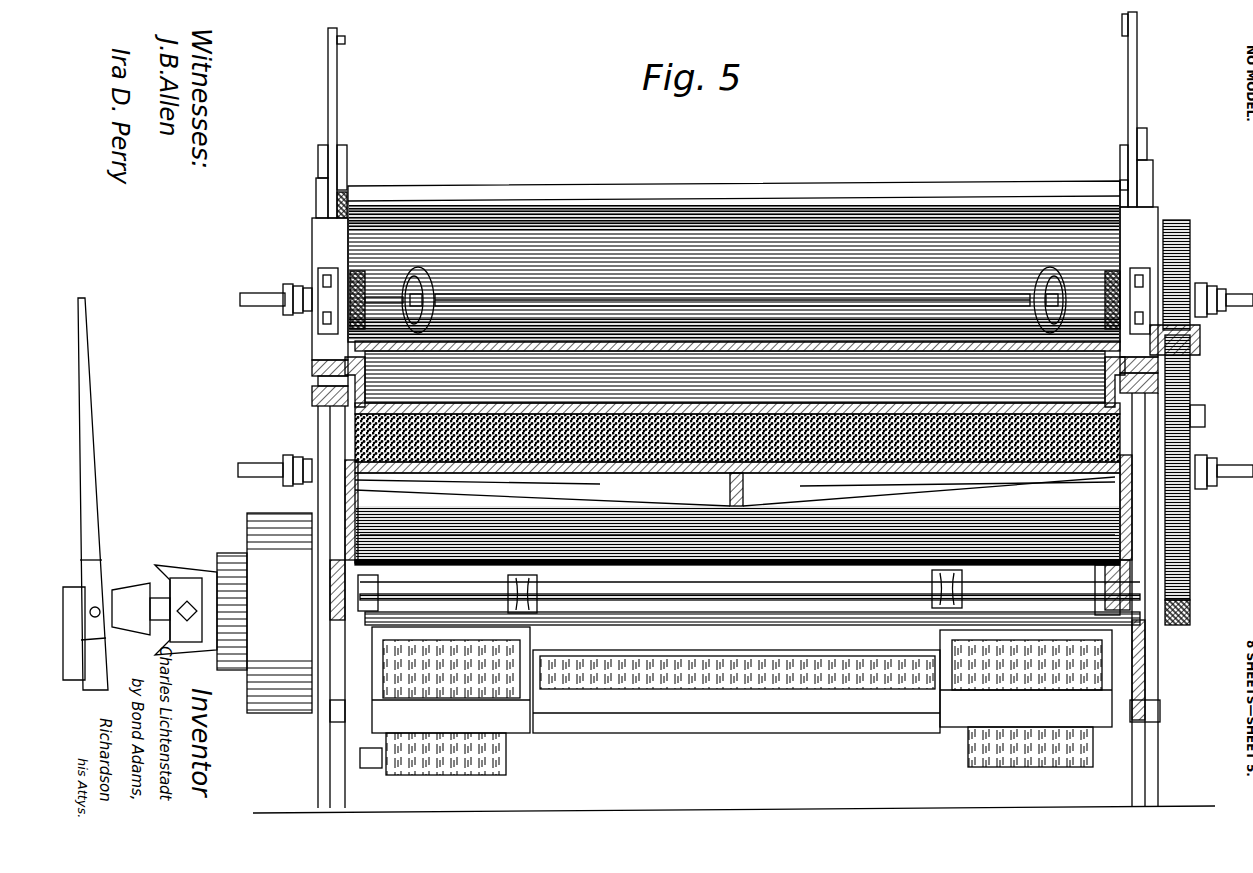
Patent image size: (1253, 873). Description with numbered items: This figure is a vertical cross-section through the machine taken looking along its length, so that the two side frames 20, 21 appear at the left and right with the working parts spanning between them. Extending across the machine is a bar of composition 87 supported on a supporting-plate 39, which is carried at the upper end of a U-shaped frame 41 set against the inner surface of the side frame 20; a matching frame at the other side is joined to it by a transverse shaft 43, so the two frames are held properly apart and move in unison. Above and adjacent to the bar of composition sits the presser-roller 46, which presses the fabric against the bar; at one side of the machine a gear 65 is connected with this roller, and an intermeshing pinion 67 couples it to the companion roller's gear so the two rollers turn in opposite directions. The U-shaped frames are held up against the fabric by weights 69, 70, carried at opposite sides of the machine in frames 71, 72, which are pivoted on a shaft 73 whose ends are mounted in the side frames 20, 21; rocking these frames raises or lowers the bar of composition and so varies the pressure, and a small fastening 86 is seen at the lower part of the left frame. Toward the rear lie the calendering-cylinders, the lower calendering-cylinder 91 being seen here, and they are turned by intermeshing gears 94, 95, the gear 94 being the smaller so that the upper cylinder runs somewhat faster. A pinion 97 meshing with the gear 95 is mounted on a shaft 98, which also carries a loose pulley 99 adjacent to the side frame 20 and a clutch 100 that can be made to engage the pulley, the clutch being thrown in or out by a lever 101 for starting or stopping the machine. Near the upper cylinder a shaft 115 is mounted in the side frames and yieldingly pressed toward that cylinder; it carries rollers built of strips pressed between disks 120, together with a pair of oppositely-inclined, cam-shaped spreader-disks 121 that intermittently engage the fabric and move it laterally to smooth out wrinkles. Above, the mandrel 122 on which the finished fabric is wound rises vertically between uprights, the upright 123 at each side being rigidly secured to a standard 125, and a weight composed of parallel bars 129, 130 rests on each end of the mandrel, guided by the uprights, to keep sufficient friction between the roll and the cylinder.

The side frame 20 is at (330, 433).
The side frame 21 is at (1153, 645).
The supporting-plate 39 is at (870, 462).
The U-shaped frame 41 is at (392, 596).
The transverse shaft 43 is at (712, 612).
The presser-roller 46 is at (735, 377).
The gear 65 is at (1190, 333).
The pinion 67 is at (1205, 418).
The weight 69 is at (450, 762).
The weight 70 is at (1045, 752).
The frame 71 is at (451, 680).
The frame 72 is at (1026, 678).
The shaft 73 is at (748, 593).
The nut 86 is at (365, 746).
The abrasive surface 87 is at (737, 438).
The lower calendering-cylinder 91 is at (862, 536).
The gear 94 is at (1190, 248).
The gear 95 is at (1192, 528).
The pinion 97 is at (1190, 585).
The shaft 98 is at (160, 605).
The loose pulley 99 is at (279, 613).
The clutch 100 is at (232, 665).
The lever 101 is at (97, 520).
The shaft 115 is at (518, 300).
The disk 120 is at (357, 282).
The spreader-disk 121 is at (435, 296).
The mandrel 122 is at (795, 192).
The upright 123 is at (330, 86).
The standard 125 is at (318, 204).
The bar 129 is at (337, 40).
The bar 130 is at (318, 159).